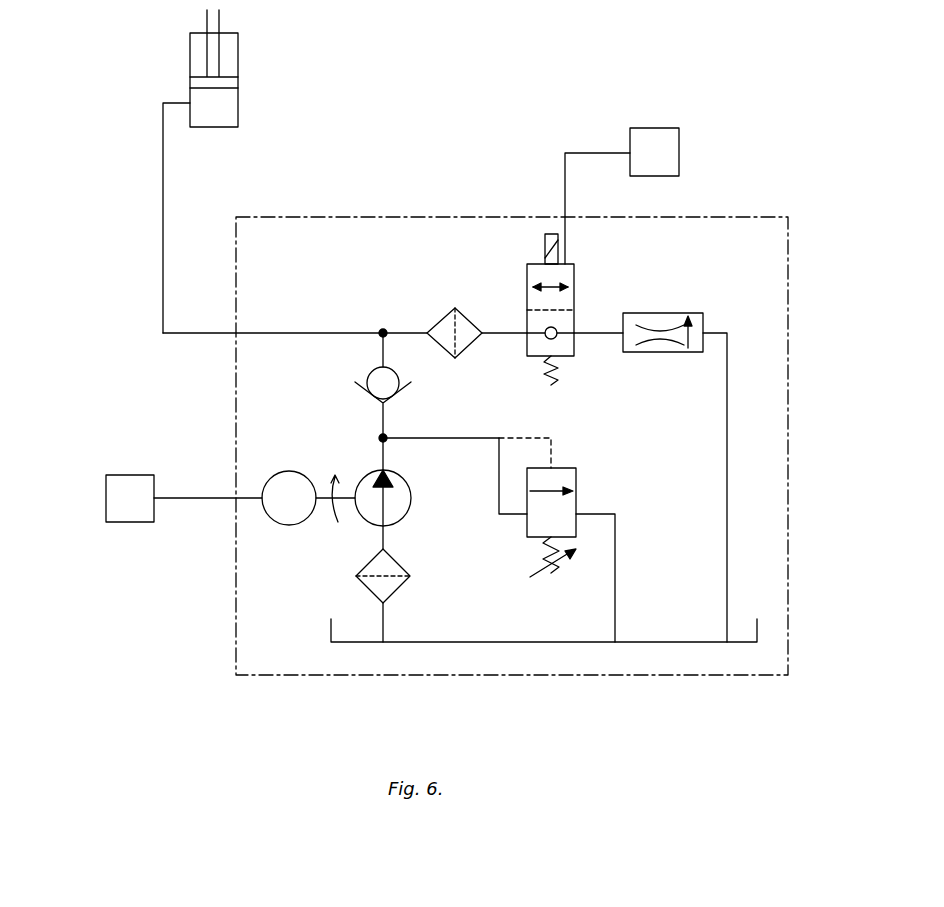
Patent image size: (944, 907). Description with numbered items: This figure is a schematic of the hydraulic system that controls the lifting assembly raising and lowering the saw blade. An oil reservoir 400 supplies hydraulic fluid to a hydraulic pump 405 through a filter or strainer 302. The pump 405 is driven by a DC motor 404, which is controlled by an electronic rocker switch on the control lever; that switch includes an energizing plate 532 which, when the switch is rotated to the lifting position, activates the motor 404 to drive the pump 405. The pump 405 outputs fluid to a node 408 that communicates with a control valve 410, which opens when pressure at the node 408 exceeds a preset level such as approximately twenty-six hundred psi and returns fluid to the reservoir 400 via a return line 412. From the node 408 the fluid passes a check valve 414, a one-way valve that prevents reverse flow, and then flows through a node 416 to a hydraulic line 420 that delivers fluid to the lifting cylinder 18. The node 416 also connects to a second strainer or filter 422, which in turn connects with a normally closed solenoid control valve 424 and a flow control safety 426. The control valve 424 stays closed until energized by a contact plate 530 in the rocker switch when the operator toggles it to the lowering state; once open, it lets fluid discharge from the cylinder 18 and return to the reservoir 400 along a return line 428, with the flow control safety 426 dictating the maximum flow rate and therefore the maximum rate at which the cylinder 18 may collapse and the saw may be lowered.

The lifting cylinder 18 is at (193, 57).
The hydraulic line 420 is at (163, 203).
The energizing plate 532 is at (112, 499).
The DC motor 404 is at (276, 472).
The hydraulic pump 405 is at (410, 515).
The node 408 is at (388, 441).
The filter or strainer 302 is at (390, 583).
The oil reservoir 400 is at (423, 644).
The node 416 is at (385, 328).
The check valve 414 is at (393, 385).
The second strainer or filter 422 is at (483, 320).
The normally closed solenoid control valve 424 is at (570, 272).
The flow control safety 426 is at (676, 312).
The return line 428 is at (727, 410).
The contact plate 530 is at (668, 153).
The control valve 410 is at (578, 500).
The return line 412 is at (616, 583).